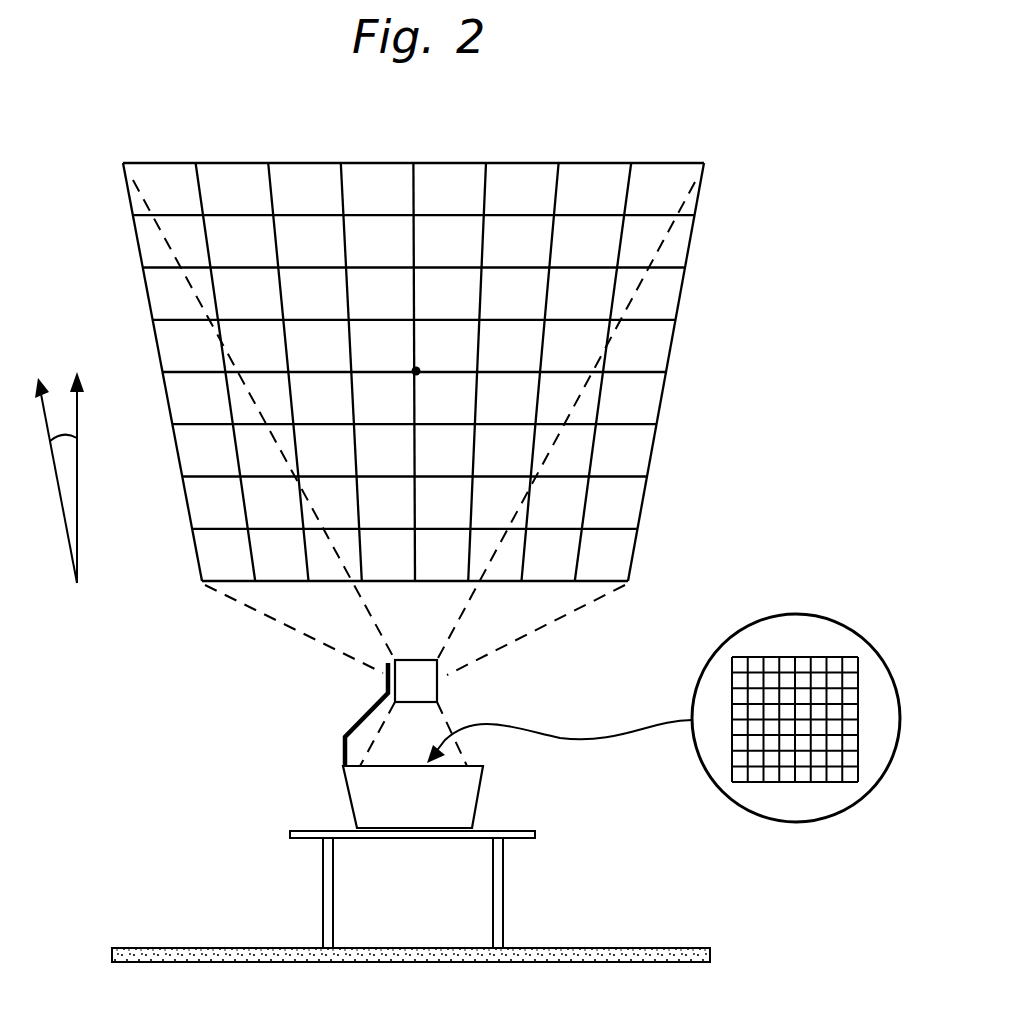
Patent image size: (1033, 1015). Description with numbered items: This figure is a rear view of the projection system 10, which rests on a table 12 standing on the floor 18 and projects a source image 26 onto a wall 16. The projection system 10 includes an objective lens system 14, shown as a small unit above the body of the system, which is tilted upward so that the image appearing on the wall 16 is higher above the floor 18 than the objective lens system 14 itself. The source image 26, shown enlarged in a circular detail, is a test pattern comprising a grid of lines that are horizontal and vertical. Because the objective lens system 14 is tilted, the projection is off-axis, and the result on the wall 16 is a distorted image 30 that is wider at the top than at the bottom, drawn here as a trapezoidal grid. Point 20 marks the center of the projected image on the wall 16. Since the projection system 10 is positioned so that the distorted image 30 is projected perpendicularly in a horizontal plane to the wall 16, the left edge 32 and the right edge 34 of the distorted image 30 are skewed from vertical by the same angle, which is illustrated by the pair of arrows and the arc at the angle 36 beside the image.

The projection system 10 is at (480, 802).
The table 12 is at (503, 882).
The objective lens system 14 is at (437, 683).
The wall 16 is at (708, 410).
The floor 18 is at (590, 948).
The point 20 is at (416, 371).
The source image 26 is at (832, 618).
The distorted image 30 is at (669, 158).
The left edge 32 is at (157, 352).
The right edge 34 is at (678, 301).
The angle 36 is at (63, 440).